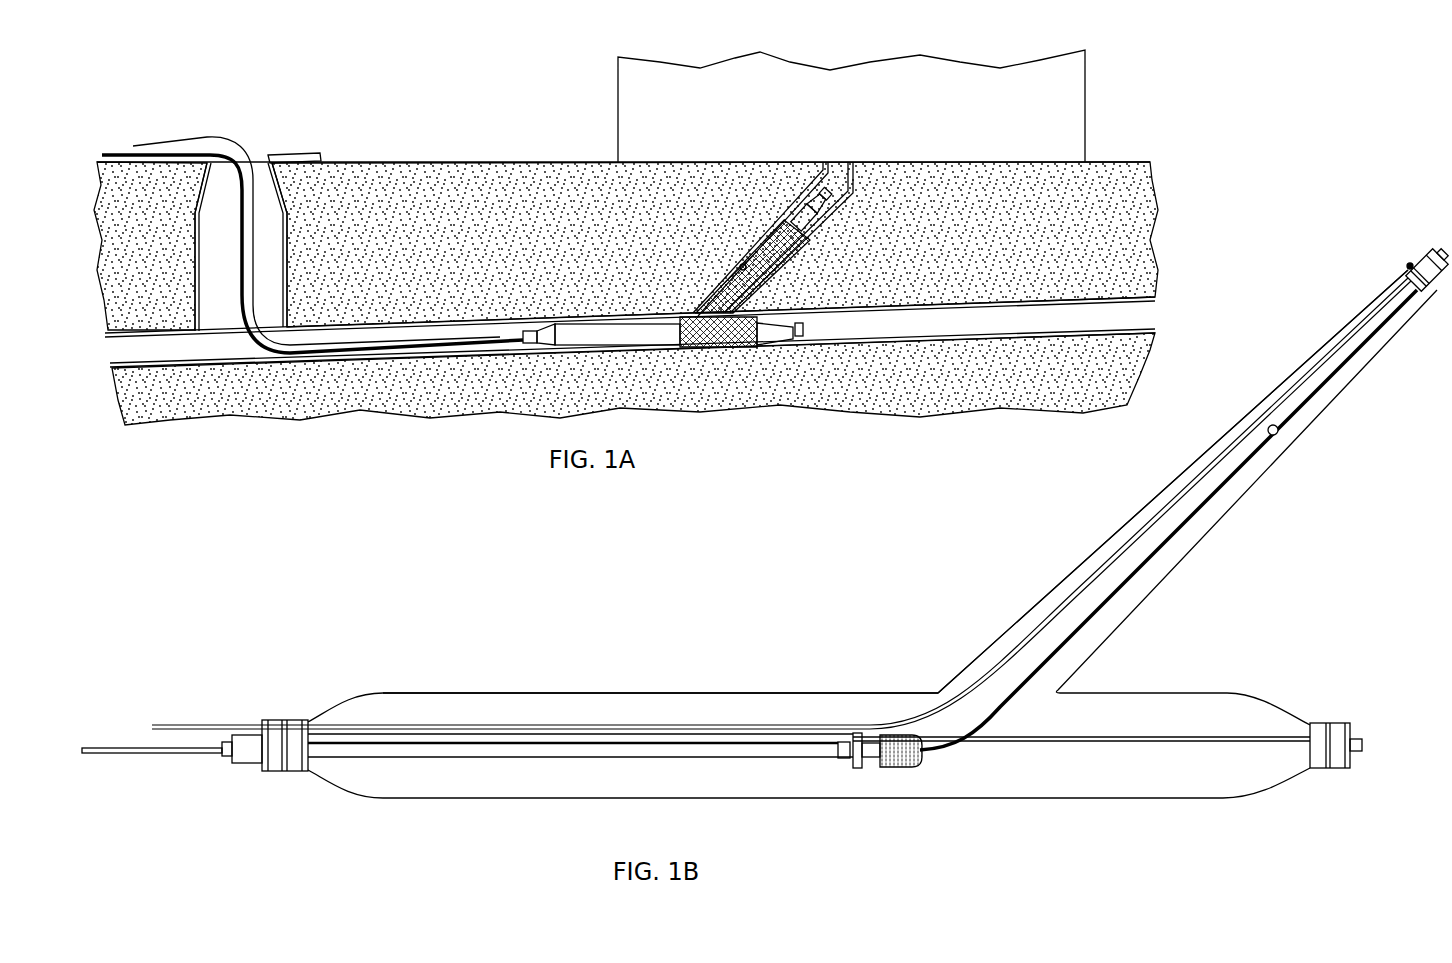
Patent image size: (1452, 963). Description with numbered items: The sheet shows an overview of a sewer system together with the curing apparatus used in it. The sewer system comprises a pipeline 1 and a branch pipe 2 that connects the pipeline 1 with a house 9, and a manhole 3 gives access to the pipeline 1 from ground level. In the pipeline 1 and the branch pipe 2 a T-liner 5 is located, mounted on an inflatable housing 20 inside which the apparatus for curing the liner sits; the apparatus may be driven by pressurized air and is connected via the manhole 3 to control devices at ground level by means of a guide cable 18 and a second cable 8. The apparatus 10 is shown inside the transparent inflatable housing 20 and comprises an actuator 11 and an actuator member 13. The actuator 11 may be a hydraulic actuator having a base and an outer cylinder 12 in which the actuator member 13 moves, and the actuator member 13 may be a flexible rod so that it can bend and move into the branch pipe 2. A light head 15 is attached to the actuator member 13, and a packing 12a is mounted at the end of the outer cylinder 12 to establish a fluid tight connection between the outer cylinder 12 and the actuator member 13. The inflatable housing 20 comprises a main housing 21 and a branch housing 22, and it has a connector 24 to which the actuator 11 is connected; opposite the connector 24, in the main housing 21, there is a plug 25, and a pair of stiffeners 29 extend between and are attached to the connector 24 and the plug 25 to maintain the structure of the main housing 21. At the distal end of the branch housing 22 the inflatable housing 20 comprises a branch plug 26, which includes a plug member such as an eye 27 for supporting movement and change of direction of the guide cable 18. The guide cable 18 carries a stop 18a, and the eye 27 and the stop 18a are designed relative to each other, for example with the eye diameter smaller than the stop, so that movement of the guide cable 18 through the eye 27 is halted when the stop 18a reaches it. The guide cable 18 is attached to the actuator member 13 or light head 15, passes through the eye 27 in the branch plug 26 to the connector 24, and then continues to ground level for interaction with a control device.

In FIG. 1A, the pipeline 1 is at (1147, 318).
In FIG. 1A, the branch pipe 2 is at (838, 173).
In FIG. 1A, the manhole 3 is at (262, 170).
In FIG. 1A, the T-liner 5 is at (580, 333).
In FIG. 1A, the cable 8 is at (130, 152).
In FIG. 1B, the cable 8 is at (174, 748).
In FIG. 1A, the house 9 is at (1087, 131).
In FIG. 1B, the apparatus 10 is at (767, 550).
In FIG. 1B, the actuator 11 is at (248, 735).
In FIG. 1B, the outer cylinder 12 is at (745, 733).
In FIG. 1B, the packing 12a is at (840, 762).
In FIG. 1B, the actuator member 13 is at (872, 762).
In FIG. 1B, the light head 15 is at (895, 768).
In FIG. 1A, the guide cable 18 is at (163, 137).
In FIG. 1B, the guide cable 18 is at (1251, 457).
In FIG. 1B, the stop 18a is at (1280, 437).
In FIG. 1A, the inflatable housing 20 is at (578, 328).
In FIG. 1B, the inflatable housing 20 is at (822, 693).
In FIG. 1B, the main housing 21 is at (615, 693).
In FIG. 1B, the branch housing 22 is at (975, 657).
In FIG. 1B, the connector 24 is at (292, 720).
In FIG. 1B, the plug 25 is at (1352, 768).
In FIG. 1B, the branch plug 26 is at (1437, 290).
In FIG. 1B, the eye 27 is at (1412, 280).
In FIG. 1B, the stiffeners 29 is at (1067, 742).